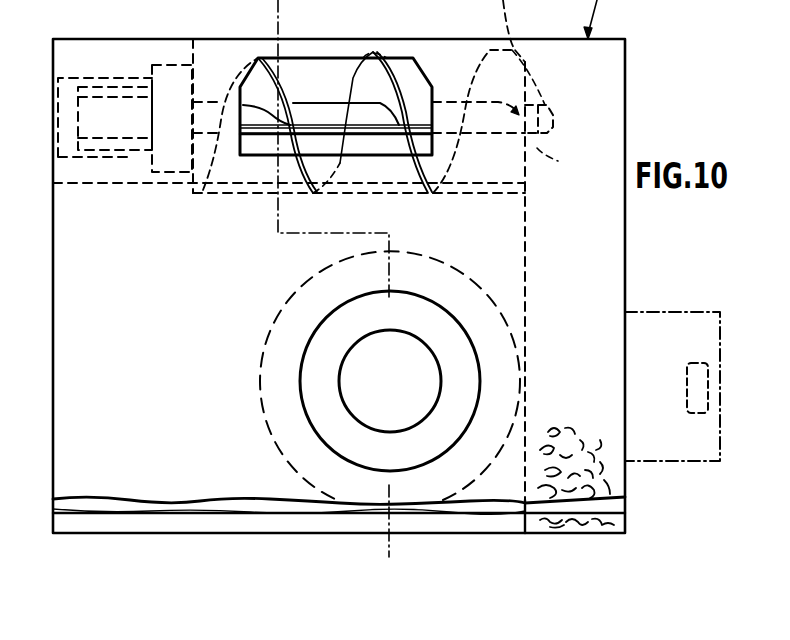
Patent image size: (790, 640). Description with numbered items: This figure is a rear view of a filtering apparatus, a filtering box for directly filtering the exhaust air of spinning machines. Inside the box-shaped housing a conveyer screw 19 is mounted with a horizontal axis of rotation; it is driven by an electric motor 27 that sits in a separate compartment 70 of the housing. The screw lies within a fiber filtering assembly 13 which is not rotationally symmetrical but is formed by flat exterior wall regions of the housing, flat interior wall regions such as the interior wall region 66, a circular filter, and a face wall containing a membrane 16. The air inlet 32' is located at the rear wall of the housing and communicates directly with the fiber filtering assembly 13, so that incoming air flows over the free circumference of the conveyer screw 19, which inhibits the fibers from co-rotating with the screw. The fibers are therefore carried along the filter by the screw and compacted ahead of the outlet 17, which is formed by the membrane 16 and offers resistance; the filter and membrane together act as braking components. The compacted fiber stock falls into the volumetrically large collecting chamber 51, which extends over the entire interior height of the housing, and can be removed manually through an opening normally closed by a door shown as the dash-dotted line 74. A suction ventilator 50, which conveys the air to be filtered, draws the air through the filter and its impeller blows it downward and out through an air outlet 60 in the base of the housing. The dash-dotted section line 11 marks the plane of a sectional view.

The electric motor 27 is at (108, 95).
The separate compartment 70 is at (135, 64).
The flat interior wall region 66 is at (192, 62).
The fiber filtering assembly 13 is at (240, 193).
The air inlet 32' is at (374, 96).
The conveyer screw 19 is at (407, 80).
The air outlet 60 is at (431, 0).
The outlet 17 is at (549, 101).
The membrane 16 is at (558, 161).
The section line 11 is at (291, 7).
The ventilator 50 is at (343, 332).
The door 74 is at (666, 311).
The collecting chamber 51 is at (625, 490).